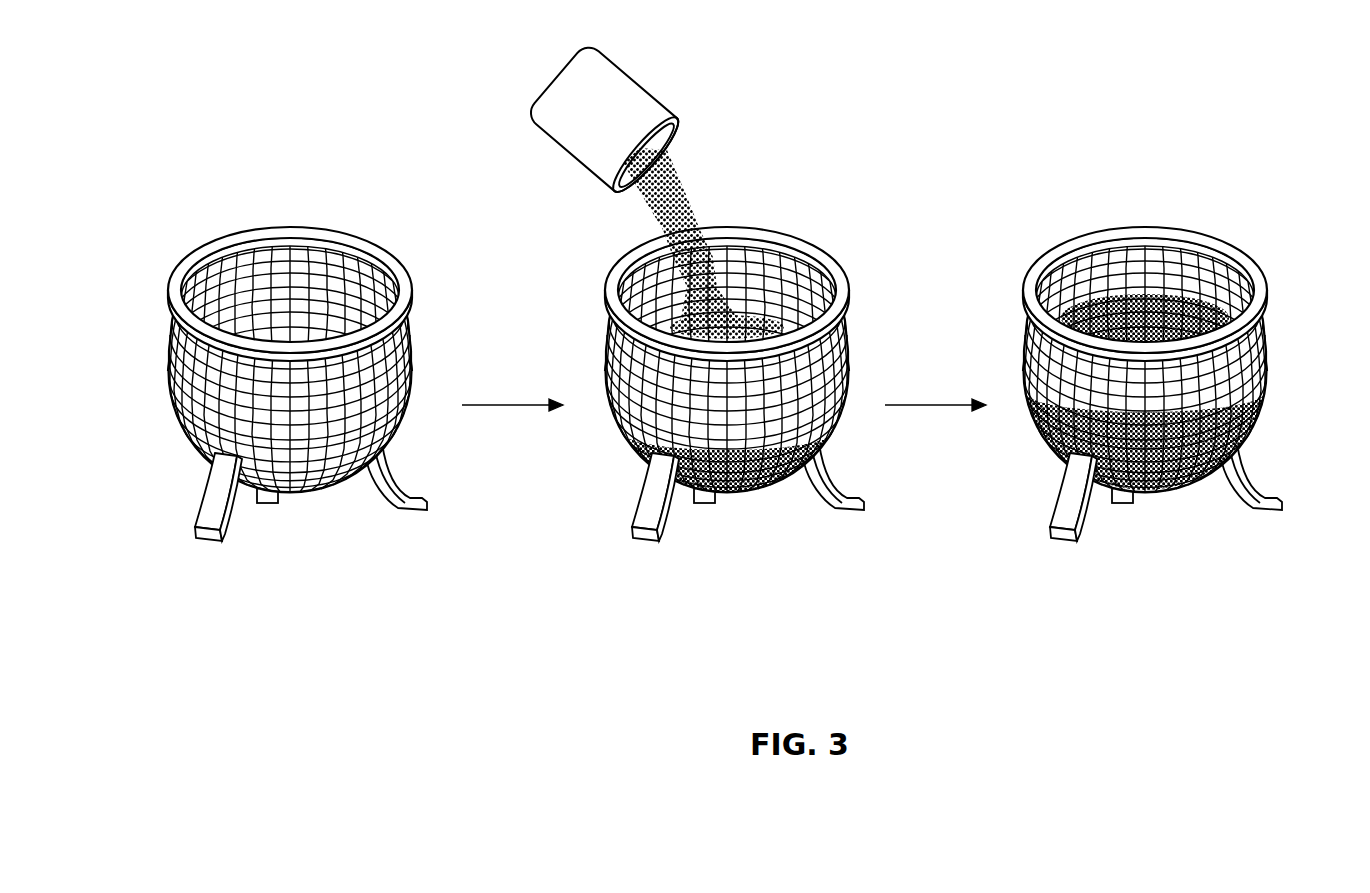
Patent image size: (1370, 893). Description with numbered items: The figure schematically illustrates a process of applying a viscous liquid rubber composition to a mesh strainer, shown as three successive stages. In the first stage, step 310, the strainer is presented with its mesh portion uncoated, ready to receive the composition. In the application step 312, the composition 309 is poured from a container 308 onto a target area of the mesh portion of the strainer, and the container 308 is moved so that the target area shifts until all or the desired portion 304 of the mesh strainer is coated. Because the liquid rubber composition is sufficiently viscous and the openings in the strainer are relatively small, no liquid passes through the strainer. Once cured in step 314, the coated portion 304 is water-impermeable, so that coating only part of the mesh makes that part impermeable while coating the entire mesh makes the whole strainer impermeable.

The coated portion 304 is at (1067, 433).
The container 308 is at (562, 138).
The composition 309 is at (678, 200).
The step 310 is at (253, 420).
The application step 312 is at (667, 330).
The step 314 is at (1148, 423).